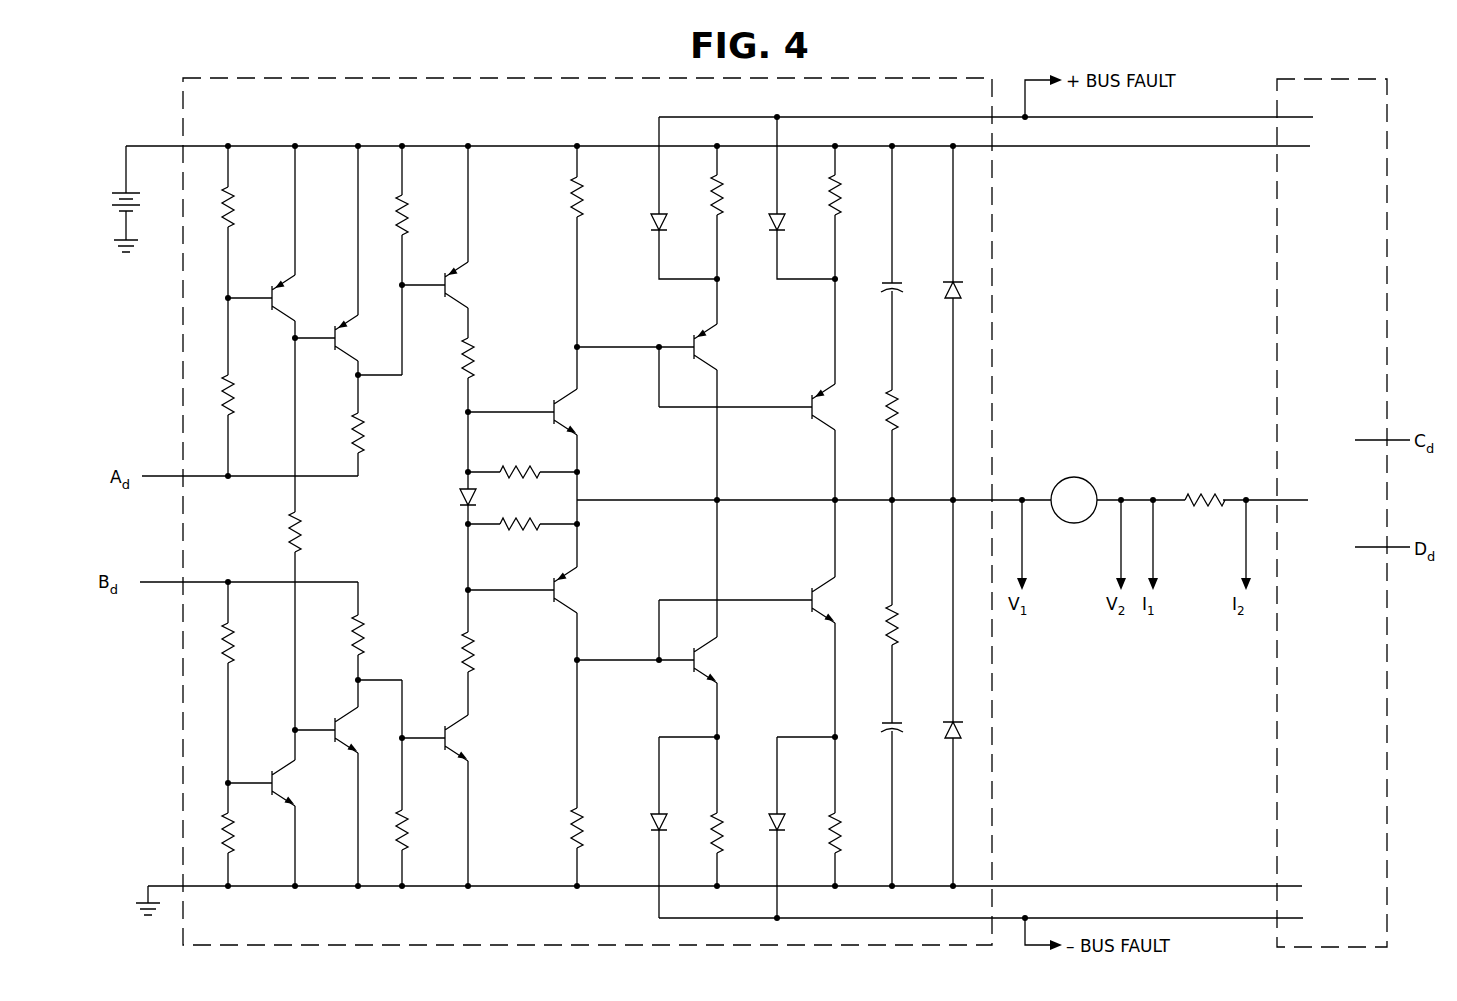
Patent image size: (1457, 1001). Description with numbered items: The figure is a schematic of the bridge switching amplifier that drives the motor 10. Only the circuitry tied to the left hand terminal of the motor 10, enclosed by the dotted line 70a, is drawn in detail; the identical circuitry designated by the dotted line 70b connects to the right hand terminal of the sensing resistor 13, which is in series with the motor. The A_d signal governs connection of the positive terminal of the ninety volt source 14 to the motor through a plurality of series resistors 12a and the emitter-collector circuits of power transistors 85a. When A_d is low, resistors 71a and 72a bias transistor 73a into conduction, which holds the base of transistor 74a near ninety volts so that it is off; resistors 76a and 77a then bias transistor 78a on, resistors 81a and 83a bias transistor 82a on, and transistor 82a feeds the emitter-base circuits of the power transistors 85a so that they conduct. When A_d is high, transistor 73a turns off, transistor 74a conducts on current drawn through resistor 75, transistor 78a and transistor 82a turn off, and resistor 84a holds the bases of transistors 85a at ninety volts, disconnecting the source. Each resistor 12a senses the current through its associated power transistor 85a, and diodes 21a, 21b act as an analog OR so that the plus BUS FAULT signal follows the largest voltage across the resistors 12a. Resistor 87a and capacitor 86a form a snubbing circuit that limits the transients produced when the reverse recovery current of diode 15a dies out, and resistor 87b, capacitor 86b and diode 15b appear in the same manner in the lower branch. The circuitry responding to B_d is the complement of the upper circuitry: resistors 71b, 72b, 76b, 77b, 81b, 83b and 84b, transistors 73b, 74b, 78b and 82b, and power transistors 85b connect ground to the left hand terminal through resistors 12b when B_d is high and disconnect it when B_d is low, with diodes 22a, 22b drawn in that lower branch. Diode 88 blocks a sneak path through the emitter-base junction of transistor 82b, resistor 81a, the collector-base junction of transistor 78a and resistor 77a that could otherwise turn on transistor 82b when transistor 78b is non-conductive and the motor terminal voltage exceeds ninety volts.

The motor 10 is at (1090, 478).
The series resistor 12a is at (706, 204).
The resistor 12b is at (728, 830).
The sensing resistor 13 is at (1214, 480).
The 90 volt source 14 is at (110, 174).
The diode 15a is at (940, 302).
The diode 15b is at (969, 714).
The diode 21a is at (648, 214).
The diode 21b is at (766, 214).
The diode 22a is at (670, 820).
The diode 22b is at (788, 820).
The dotted line 70a is at (372, 76).
The dotted line 70b is at (1382, 74).
The resistor 71a is at (238, 212).
The resistor 71b is at (238, 838).
The resistor 72a is at (238, 398).
The resistor 72b is at (238, 640).
The transistor 73a is at (285, 308).
The transistor 73b is at (284, 790).
The transistor 74a is at (348, 348).
The transistor 74b is at (348, 740).
The resistor 75 is at (305, 534).
The resistor 76a is at (368, 438).
The resistor 76b is at (368, 634).
The resistor 77a is at (412, 216).
The resistor 77b is at (412, 832).
The transistor 78a is at (458, 296).
The transistor 78b is at (458, 748).
The resistor 81a is at (478, 360).
The resistor 81b is at (478, 654).
The transistor 82a is at (566, 413).
The transistor 82b is at (566, 594).
The resistor 83a is at (535, 458).
The resistor 83b is at (535, 512).
The resistor 84a is at (555, 192).
The resistor 84b is at (587, 822).
The power transistor 85a is at (706, 356).
The transistor 85b is at (706, 664).
The capacitor 86a is at (902, 294).
The capacitor 86b is at (902, 734).
The resistor 87a is at (902, 412).
The resistor 87b is at (902, 628).
The diode 88 is at (458, 498).